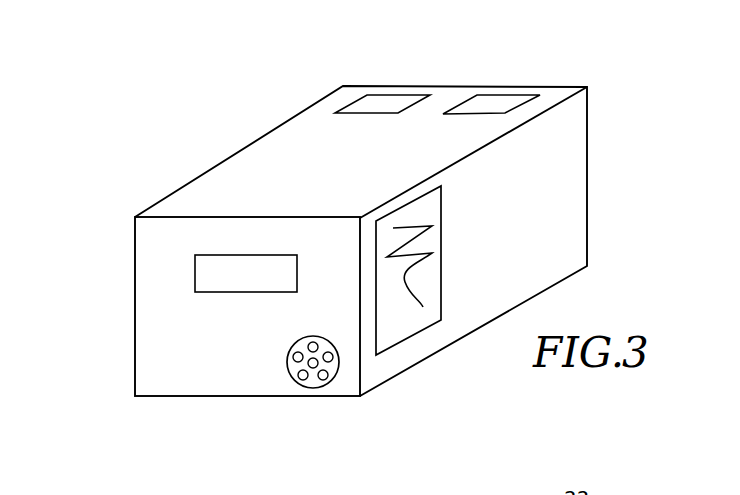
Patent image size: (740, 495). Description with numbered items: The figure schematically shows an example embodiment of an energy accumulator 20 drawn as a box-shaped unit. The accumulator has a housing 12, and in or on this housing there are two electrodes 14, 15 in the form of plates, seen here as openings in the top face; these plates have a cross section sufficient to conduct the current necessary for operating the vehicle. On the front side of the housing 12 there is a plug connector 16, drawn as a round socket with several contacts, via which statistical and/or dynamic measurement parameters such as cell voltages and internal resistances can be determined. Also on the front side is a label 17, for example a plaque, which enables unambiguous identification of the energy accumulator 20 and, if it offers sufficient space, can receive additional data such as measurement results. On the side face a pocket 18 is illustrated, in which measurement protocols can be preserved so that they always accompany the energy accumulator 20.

The housing 12 is at (147, 344).
The electrode 14 is at (389, 108).
The electrode 15 is at (496, 108).
The plug connector 16 is at (312, 385).
The label 17 is at (257, 285).
The pocket 18 is at (423, 307).
The energy accumulator 20 is at (264, 124).